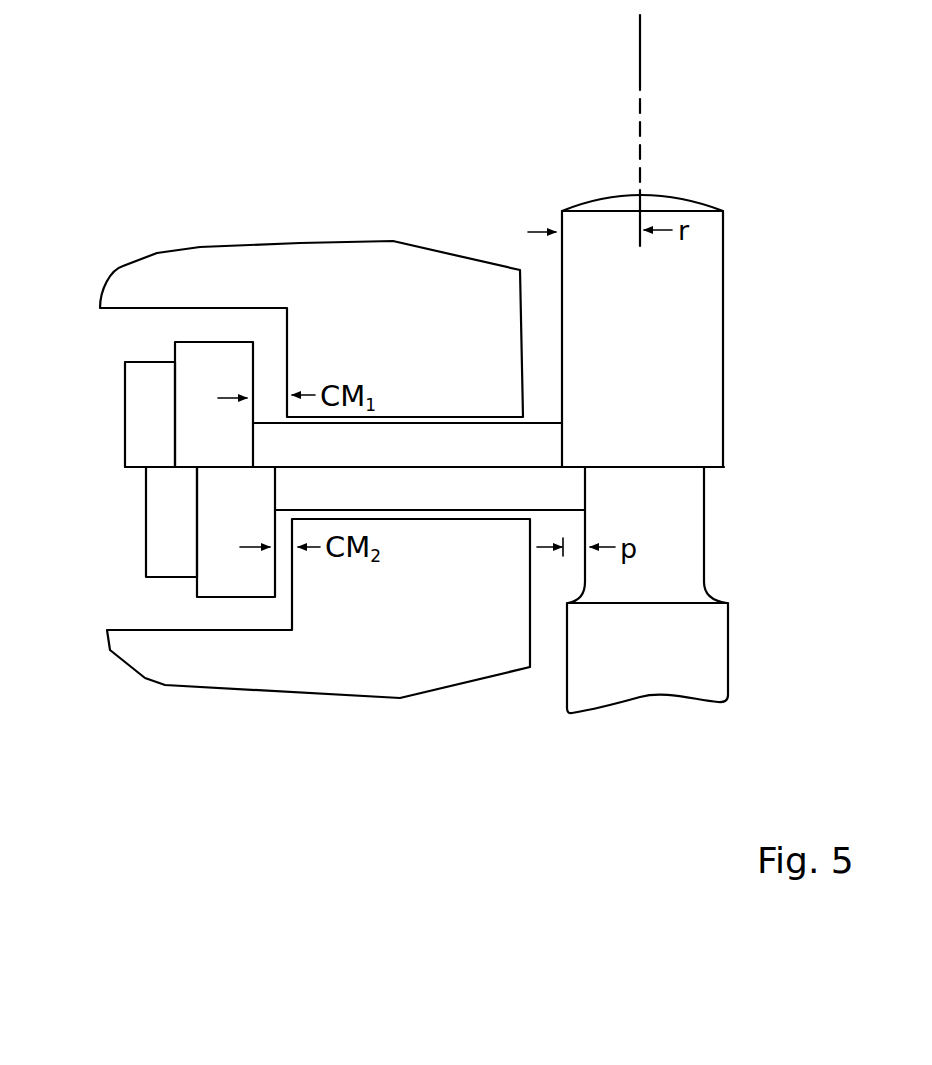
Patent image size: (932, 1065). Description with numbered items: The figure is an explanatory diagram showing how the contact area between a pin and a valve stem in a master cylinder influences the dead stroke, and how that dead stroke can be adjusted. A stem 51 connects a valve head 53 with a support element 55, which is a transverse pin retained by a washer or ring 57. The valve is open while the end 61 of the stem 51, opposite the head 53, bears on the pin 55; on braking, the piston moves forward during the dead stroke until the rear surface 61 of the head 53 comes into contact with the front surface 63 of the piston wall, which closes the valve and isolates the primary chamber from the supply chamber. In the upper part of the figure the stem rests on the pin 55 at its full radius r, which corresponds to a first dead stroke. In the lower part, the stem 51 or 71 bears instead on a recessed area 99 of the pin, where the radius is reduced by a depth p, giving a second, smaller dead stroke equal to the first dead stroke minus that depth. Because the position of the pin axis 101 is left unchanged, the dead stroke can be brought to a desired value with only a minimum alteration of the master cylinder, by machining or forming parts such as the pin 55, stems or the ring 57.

The pin axis 101 is at (640, 52).
The support element 55 is at (728, 331).
The ring 57 is at (723, 264).
The recessed area 99 is at (704, 515).
The stem 51 is at (424, 597).
The stem 71 is at (477, 498).
The valve head 53 is at (125, 430).
The end of the stem 61 is at (253, 372).
The front surface of the wall 63 is at (292, 612).